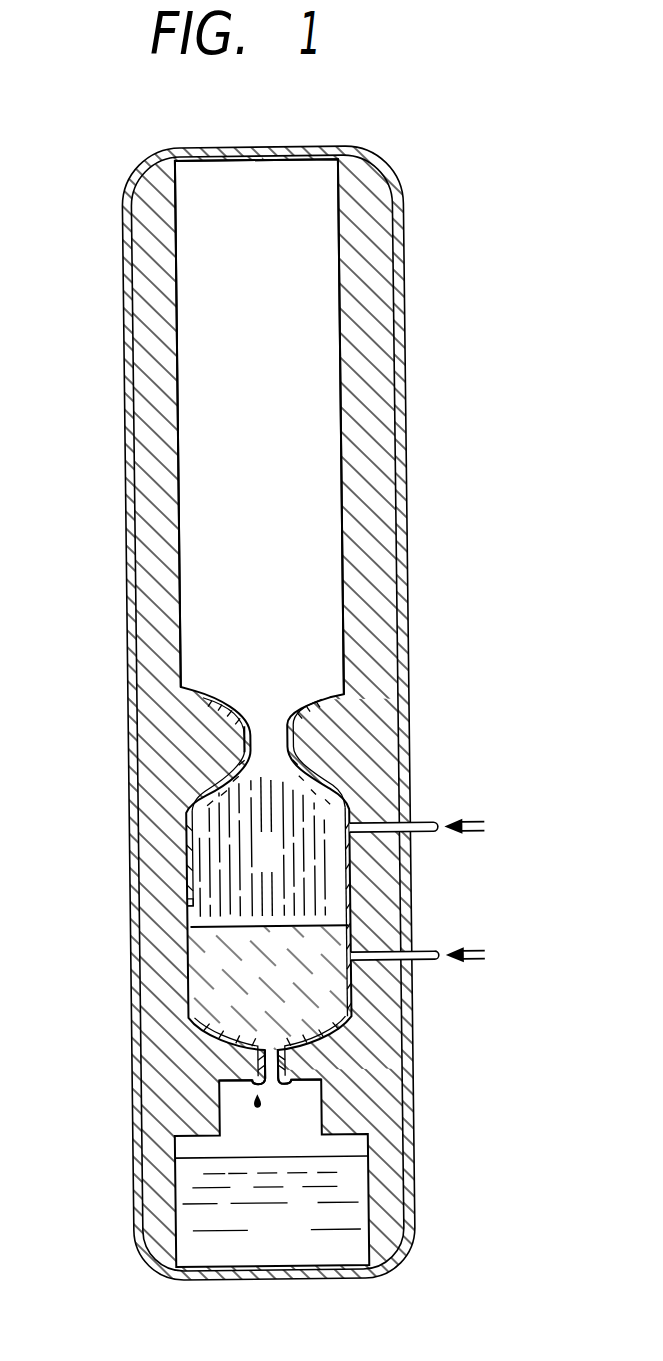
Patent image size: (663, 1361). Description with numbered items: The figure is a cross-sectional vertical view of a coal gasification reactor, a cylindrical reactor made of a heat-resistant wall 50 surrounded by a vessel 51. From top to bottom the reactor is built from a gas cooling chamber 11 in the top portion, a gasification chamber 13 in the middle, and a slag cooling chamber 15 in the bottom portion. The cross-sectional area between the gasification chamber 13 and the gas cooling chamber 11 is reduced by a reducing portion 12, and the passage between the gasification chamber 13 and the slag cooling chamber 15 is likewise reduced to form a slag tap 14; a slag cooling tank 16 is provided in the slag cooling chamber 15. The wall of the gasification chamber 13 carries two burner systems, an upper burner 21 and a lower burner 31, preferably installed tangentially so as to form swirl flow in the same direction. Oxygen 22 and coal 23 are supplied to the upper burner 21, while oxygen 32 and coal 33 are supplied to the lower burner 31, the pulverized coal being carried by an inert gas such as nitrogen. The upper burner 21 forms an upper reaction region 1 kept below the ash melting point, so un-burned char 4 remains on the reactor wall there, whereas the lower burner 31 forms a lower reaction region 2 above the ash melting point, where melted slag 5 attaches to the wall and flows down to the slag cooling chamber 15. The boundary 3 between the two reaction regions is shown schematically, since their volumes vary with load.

The upper reaction region 1 is at (276, 868).
The lower reaction region 2 is at (278, 1003).
The boundary between the upper and the lower reaction regions 3 is at (200, 928).
The un-burned char 4 is at (348, 788).
The melted slag 5 is at (338, 1028).
The gas cooling chamber 11 is at (242, 432).
The reducing portion 12 is at (245, 733).
The gasification chamber 13 is at (196, 914).
The slag tap 14 is at (268, 1058).
The slag cooling chamber 15 is at (264, 1143).
The slag cooling tank 16 is at (250, 1249).
The upper burner 21 is at (422, 824).
The oxygen supplied to the upper burner 22 is at (470, 823).
The coal supplied to the upper burner 23 is at (474, 833).
The lower burner 31 is at (428, 953).
The oxygen supplied to the lower burner 32 is at (477, 953).
The coal supplied to the lower burner 33 is at (476, 961).
The heat-resistant wall 50 is at (382, 572).
The vessel 51 is at (408, 674).